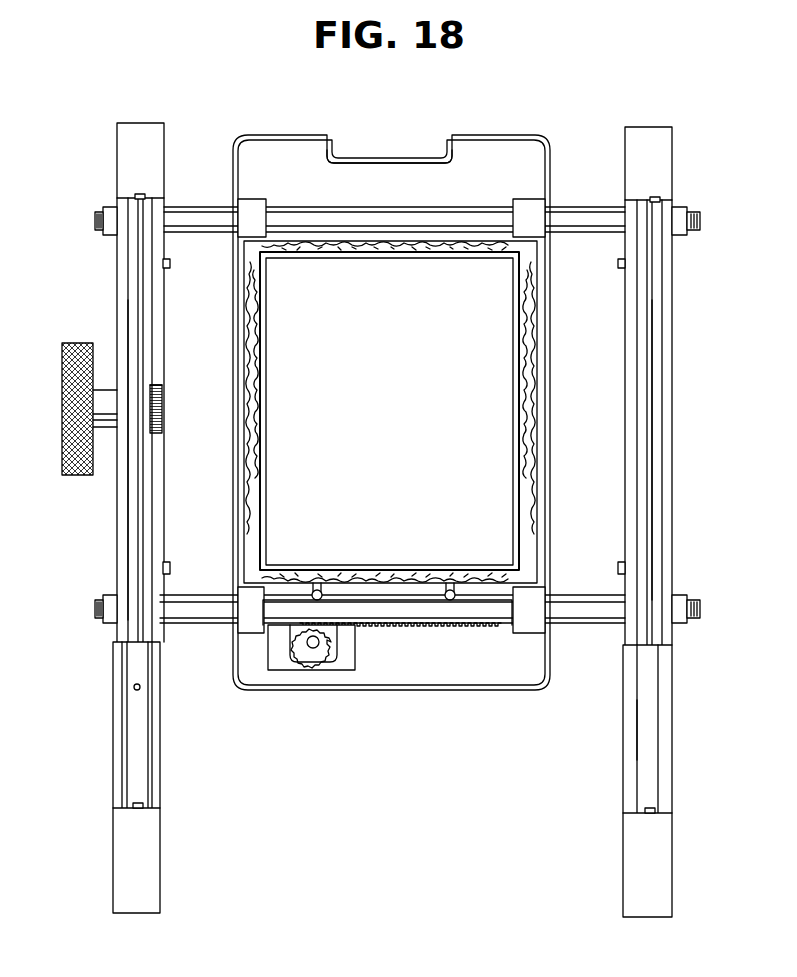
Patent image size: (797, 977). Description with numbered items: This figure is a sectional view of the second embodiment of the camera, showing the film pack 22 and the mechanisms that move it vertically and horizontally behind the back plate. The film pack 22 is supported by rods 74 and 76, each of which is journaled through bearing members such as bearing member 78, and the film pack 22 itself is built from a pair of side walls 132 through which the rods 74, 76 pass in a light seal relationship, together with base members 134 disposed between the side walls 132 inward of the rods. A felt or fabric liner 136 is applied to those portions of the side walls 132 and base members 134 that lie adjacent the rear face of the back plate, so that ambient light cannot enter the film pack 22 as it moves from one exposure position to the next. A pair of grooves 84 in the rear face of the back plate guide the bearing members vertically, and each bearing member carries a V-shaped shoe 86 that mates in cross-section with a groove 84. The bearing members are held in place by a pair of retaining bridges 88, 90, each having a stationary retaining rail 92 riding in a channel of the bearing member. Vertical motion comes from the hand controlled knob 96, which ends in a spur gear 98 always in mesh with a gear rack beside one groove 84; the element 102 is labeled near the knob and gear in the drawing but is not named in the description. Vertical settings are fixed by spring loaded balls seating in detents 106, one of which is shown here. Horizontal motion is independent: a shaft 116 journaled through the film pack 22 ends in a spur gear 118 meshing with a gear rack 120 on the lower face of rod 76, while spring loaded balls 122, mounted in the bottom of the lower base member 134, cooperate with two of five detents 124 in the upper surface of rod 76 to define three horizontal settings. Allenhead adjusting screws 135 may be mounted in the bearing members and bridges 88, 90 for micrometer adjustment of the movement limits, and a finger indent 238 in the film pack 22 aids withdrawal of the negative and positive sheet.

The film pack 22 is at (568, 151).
The finger indent 238 is at (428, 151).
The rod 74 is at (224, 216).
The rod 76 is at (177, 607).
The bearing member 78 is at (676, 432).
The groove 84 is at (103, 222).
The V-shaped shoe 86 is at (142, 520).
The retaining bridge 88 is at (612, 821).
The retaining bridge 90 is at (182, 890).
The stationary retaining rail 92 is at (650, 710).
The hand controlled knob 96 is at (78, 407).
The spur gear 98 is at (162, 410).
The threaded shaft 102 is at (160, 388).
The detent 106 is at (140, 686).
The shaft 116 is at (310, 650).
The spur gear 118 is at (323, 658).
The gear rack 120 is at (456, 626).
The spring loaded ball 122 is at (318, 590).
The detent 124 is at (388, 607).
The side wall 132 is at (262, 322).
The base member 134 is at (462, 262).
The allenhead adjusting screw 135 is at (137, 194).
The felt or fabric liner 136 is at (256, 402).